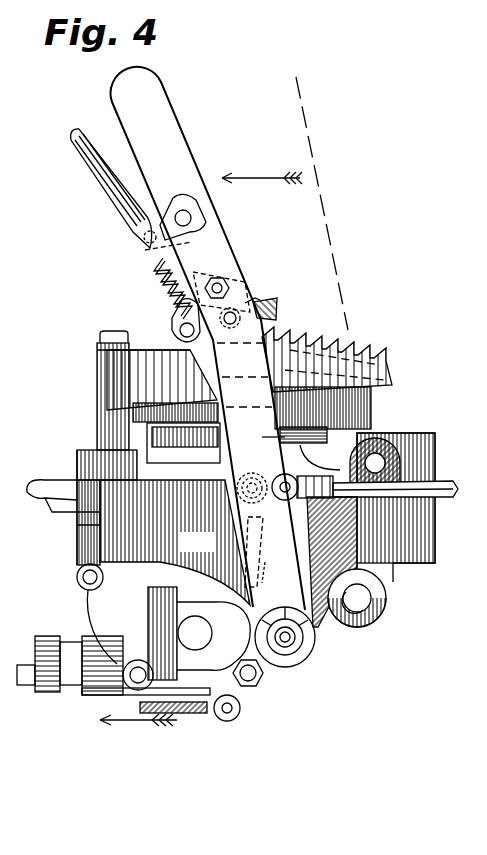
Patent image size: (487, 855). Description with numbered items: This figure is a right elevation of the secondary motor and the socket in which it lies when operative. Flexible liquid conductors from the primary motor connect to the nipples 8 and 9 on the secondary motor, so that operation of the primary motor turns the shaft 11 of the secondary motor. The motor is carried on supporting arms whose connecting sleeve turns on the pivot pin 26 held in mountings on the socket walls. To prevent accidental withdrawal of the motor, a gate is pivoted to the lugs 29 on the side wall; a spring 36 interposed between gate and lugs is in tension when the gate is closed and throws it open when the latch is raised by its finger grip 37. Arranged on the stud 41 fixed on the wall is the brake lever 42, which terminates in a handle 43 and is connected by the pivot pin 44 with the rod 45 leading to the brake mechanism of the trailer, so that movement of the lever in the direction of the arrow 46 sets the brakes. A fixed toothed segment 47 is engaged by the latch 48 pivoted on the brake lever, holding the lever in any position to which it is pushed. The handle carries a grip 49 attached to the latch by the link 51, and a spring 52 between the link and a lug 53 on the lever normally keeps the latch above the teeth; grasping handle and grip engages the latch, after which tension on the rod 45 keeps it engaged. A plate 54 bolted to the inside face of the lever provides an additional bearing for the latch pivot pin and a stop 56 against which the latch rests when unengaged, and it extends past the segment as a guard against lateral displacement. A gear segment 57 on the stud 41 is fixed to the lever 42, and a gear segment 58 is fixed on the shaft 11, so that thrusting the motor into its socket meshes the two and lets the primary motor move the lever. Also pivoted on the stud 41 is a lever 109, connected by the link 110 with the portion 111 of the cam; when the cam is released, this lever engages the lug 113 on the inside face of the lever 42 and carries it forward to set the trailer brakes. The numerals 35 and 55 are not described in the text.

The nipple 8 is at (78, 648).
The nipple 9 is at (77, 685).
The shaft 11 is at (195, 633).
The pivot pin 26 is at (370, 616).
The lugs 29 is at (77, 462).
The body 35 is at (175, 542).
The spring 36 is at (74, 522).
The finger grip 37 is at (35, 498).
The stud 41 is at (292, 646).
The lever 42 is at (243, 413).
The handle 43 is at (153, 133).
The pivot pin 44 is at (285, 490).
The rod 45 is at (443, 490).
The arrow 46 is at (262, 167).
The toothed segment 47 is at (380, 360).
The latch 48 is at (276, 307).
The grip 49 is at (95, 156).
The link 51 is at (175, 315).
The spring 52 is at (157, 289).
The lug 53 is at (150, 264).
The plate 54 is at (222, 274).
The nut 55 is at (234, 673).
The stop 56 is at (246, 300).
The gear segment 57 is at (270, 656).
The gear segment 58 is at (185, 658).
The lever 109 is at (388, 585).
The link 110 is at (335, 455).
The portion of the cam 111 is at (262, 439).
The lug 113 is at (250, 545).